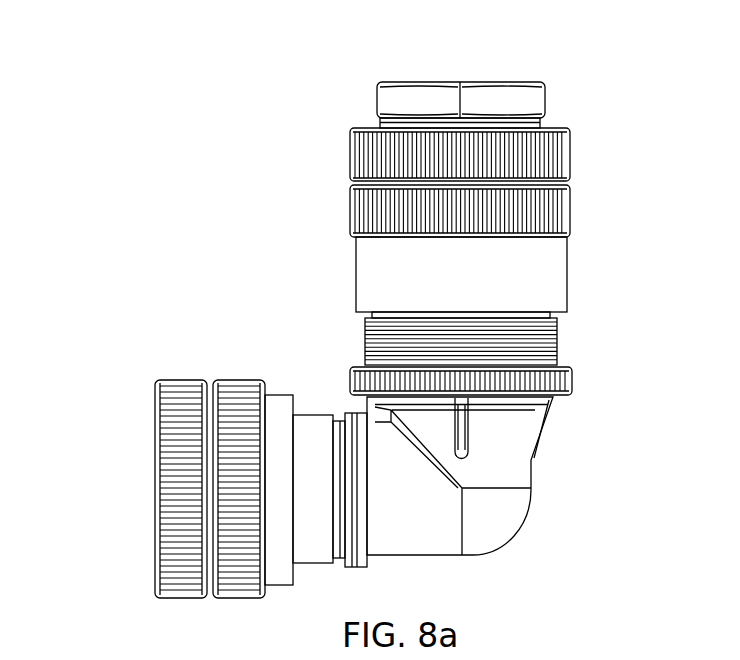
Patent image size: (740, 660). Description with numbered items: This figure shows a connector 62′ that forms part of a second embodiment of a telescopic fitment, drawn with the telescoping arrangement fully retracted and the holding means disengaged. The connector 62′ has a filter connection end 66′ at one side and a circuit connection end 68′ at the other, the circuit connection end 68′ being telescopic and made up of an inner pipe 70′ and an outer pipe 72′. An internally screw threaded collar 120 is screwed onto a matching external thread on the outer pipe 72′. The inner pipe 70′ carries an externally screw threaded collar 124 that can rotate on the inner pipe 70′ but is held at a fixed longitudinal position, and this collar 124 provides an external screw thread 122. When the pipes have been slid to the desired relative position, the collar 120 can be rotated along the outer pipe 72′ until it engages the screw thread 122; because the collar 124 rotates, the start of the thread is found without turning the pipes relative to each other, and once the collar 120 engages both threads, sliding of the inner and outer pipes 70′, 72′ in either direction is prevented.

The connector 62′ is at (72, 224).
The filter connection end 66′ is at (156, 480).
The circuit connection end 68′ is at (461, 82).
The inner pipe 70′ is at (494, 527).
The outer pipe 72′ is at (541, 120).
The collar 120 is at (571, 219).
The external screw thread 122 is at (556, 353).
The externally screw threaded collar 124 is at (573, 380).